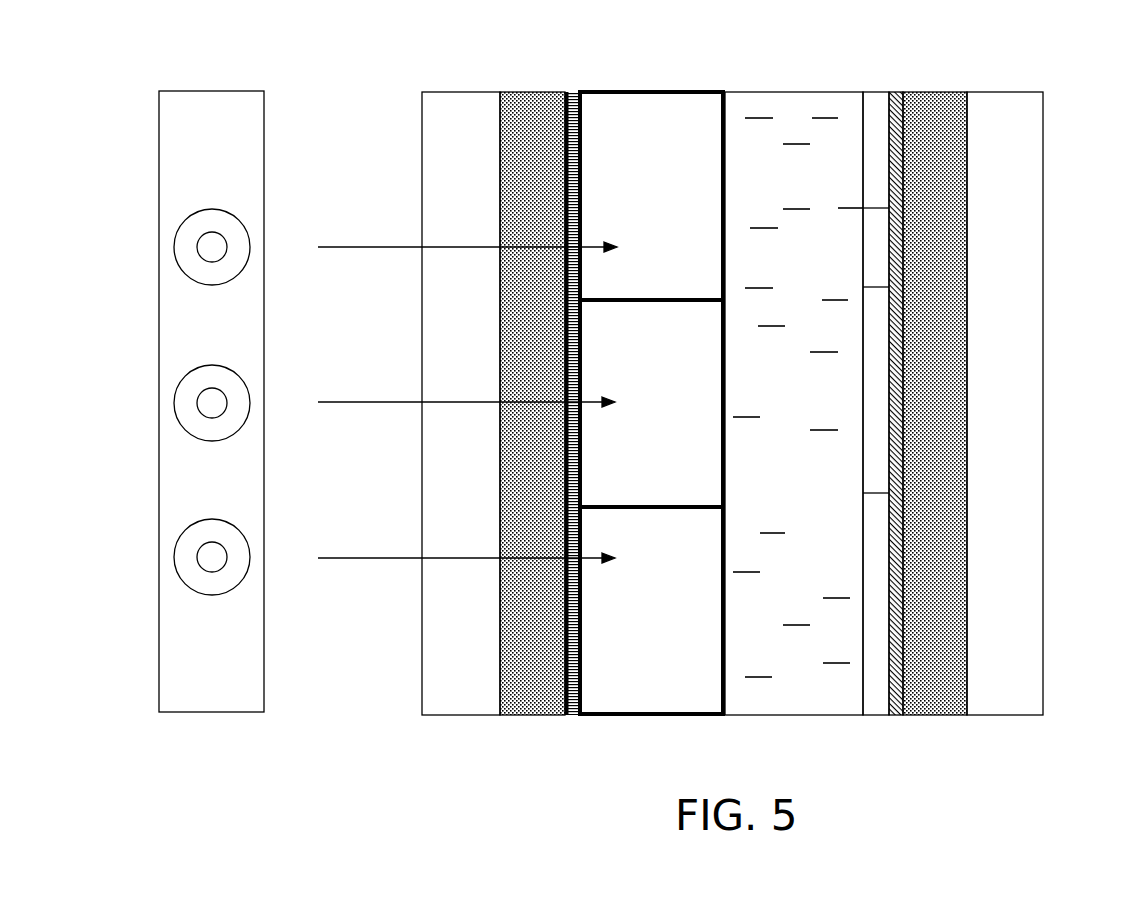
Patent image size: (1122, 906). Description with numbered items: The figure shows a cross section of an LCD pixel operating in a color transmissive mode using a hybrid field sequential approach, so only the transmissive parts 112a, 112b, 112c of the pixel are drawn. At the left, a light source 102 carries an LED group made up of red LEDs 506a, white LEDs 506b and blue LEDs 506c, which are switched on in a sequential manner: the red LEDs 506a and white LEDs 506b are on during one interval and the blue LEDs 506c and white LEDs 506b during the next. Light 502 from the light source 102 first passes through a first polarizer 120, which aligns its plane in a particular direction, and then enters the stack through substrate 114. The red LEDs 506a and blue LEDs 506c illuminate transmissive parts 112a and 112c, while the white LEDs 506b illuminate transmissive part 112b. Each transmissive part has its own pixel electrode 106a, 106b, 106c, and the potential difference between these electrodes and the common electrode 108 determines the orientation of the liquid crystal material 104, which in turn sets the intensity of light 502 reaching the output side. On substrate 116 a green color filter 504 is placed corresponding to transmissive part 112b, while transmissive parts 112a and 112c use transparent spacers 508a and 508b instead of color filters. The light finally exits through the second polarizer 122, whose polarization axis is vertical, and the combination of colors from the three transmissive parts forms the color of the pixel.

The light source 102 is at (216, 712).
The liquid crystal material 104 is at (825, 103).
The pixel electrode 106a is at (577, 92).
The pixel electrode 106b is at (578, 363).
The pixel electrode 106c is at (572, 712).
The common electrode 108 is at (897, 715).
The transmissive part 112a is at (625, 212).
The transmissive part 112b is at (623, 437).
The transmissive part 112c is at (623, 618).
The substrate 114 is at (528, 92).
The substrate 116 is at (930, 90).
The first polarizer 120 is at (462, 92).
The second polarizer 122 is at (1005, 92).
The light 502 is at (397, 558).
The green color filter 504 is at (875, 417).
The red LEDs 506a is at (173, 247).
The white LEDs 506b is at (173, 403).
The blue LEDs 506c is at (173, 557).
The transparent spacer 508a is at (875, 197).
The transparent spacer 508b is at (875, 573).